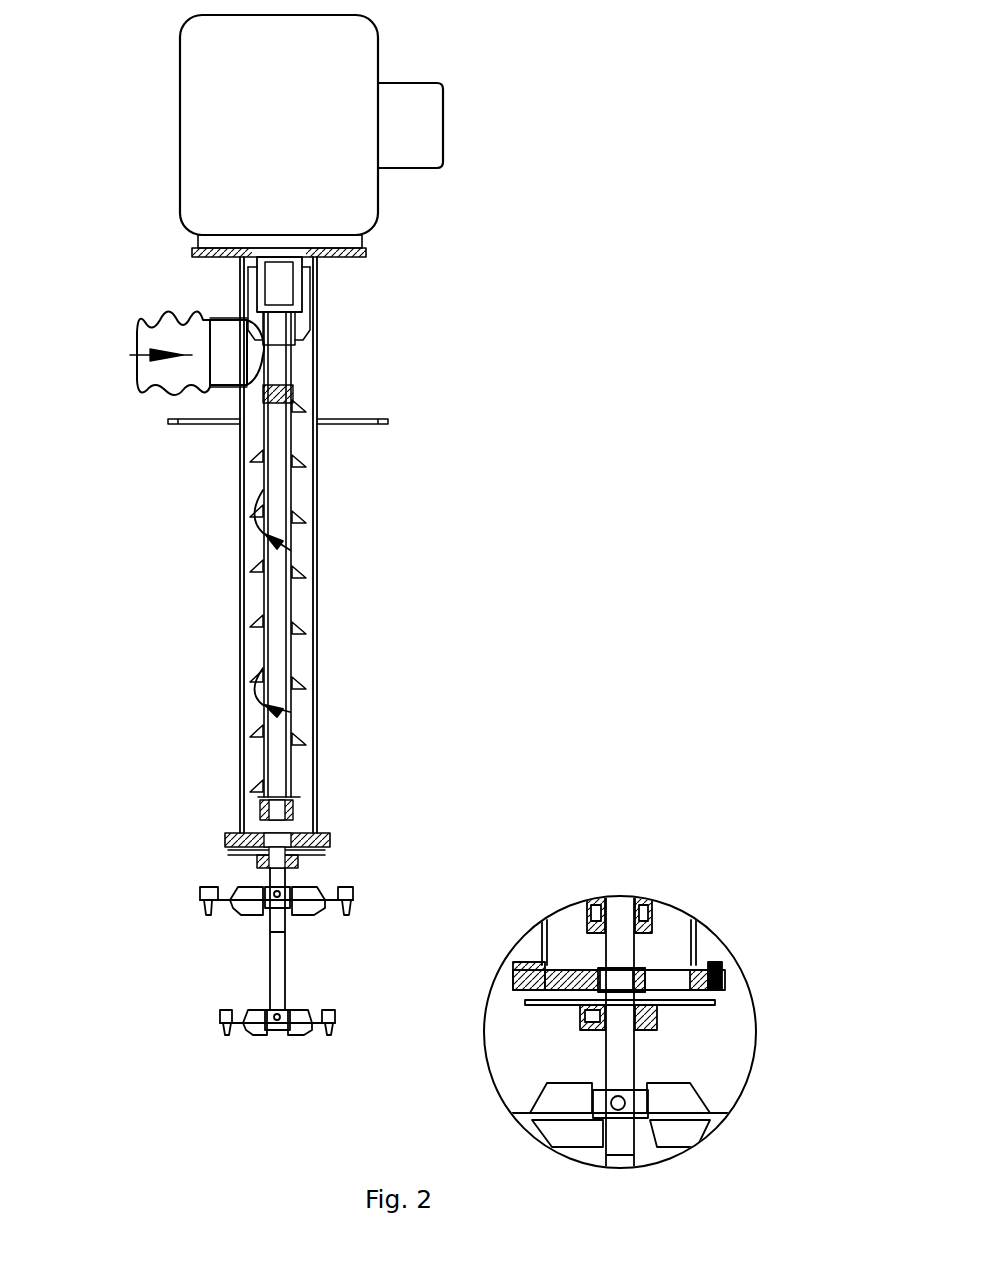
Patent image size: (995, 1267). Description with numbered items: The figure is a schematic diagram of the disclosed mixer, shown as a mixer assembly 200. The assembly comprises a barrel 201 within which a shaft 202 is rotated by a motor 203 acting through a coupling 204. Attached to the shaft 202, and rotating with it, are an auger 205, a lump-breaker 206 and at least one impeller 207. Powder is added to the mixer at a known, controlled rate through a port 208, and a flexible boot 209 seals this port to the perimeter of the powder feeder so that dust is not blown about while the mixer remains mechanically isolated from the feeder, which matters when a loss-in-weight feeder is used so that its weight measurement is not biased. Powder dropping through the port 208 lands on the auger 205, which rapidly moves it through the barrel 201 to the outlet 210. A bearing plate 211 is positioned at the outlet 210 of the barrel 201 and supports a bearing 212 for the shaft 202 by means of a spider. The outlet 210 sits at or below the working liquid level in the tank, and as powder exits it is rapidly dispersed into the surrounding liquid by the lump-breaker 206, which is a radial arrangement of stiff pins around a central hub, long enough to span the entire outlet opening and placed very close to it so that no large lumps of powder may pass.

The mixer assembly 200 is at (655, 542).
The barrel 201 is at (317, 537).
The shaft 202 is at (287, 367).
The motor 203 is at (378, 233).
The coupling 204 is at (315, 310).
The auger 205 is at (300, 643).
The lump-breaker 206 is at (715, 1005).
The impeller 207 is at (208, 915).
The port 208 is at (227, 320).
The flexible boot 209 is at (140, 330).
The outlet 210 is at (672, 980).
The bearing plate 211 is at (240, 833).
The bearing 212 is at (598, 968).